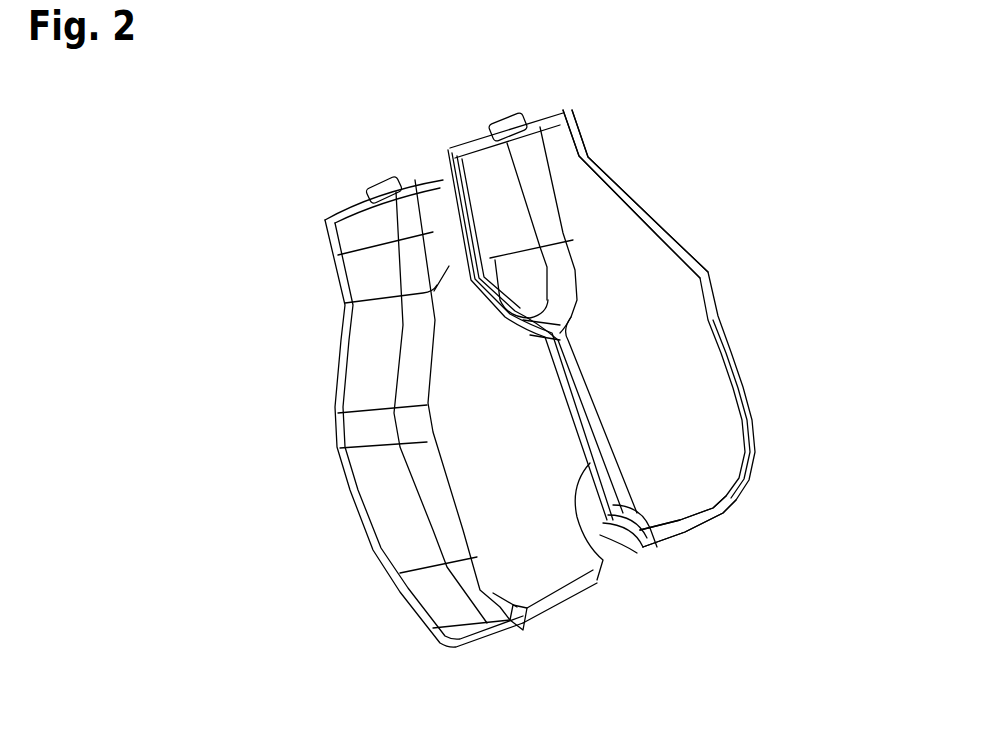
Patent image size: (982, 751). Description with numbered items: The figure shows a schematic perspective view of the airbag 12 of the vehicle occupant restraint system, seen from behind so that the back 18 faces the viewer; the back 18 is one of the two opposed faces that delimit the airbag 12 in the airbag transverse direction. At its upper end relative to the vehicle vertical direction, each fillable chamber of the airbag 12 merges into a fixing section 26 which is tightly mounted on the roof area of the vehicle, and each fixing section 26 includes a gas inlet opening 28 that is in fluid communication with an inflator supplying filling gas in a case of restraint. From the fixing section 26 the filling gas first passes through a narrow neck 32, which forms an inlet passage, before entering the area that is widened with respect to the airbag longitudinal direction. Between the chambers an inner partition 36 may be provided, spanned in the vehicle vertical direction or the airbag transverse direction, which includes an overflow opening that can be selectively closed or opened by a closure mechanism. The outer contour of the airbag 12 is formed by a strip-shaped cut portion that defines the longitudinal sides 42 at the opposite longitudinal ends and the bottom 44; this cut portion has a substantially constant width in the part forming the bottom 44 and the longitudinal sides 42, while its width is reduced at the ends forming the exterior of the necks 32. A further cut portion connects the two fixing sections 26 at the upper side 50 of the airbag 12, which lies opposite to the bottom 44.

The airbag 12 is at (209, 263).
The back 18 is at (693, 372).
The fixing section 26 is at (340, 210).
The gas inlet opening 28 is at (372, 182).
The neck 32 is at (345, 303).
The inner partition 36 is at (620, 560).
The longitudinal sides 42 is at (400, 533).
The bottom 44 is at (697, 530).
The upper side 50 is at (487, 188).